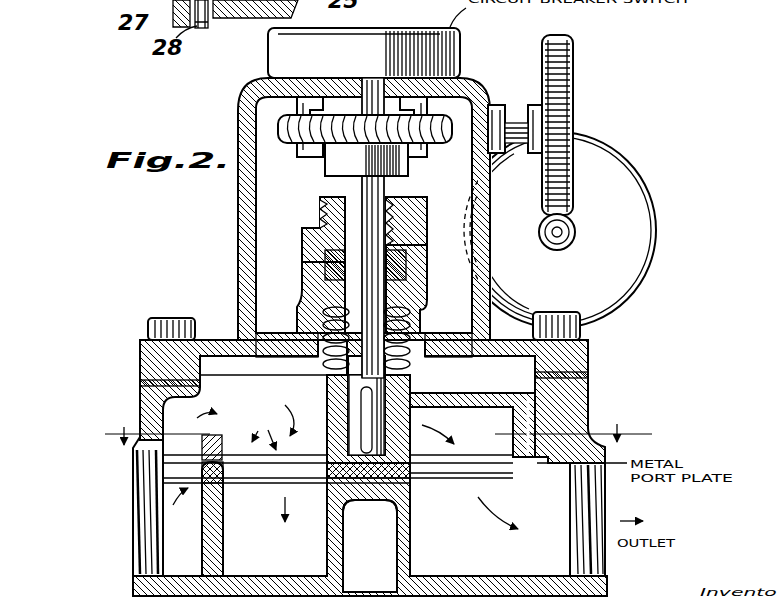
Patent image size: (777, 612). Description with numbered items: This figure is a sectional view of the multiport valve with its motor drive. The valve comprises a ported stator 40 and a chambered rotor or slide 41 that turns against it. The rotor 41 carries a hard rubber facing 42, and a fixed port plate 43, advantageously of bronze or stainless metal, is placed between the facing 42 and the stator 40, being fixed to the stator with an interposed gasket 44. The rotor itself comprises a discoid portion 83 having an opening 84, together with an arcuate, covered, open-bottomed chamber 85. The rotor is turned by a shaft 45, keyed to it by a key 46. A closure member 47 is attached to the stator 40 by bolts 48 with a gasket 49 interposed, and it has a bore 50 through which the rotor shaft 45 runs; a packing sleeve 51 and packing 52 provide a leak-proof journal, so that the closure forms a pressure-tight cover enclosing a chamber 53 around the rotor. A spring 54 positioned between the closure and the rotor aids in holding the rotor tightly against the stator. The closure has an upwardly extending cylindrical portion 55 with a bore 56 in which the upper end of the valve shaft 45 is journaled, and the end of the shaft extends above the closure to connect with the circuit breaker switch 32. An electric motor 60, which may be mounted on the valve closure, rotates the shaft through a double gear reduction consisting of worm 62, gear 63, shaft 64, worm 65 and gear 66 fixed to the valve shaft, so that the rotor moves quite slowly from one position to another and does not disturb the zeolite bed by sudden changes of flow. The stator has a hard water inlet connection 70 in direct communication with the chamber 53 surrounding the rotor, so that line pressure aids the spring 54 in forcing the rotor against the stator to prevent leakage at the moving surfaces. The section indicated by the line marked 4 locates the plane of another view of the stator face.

The circuit breaker switch 32 is at (460, 46).
The upwardly extending cylindrical portion 55 is at (483, 217).
The bore 56 is at (350, 105).
The gear 66 is at (280, 128).
The worm 65 is at (347, 190).
The shaft 64 is at (515, 117).
The gear 63 is at (562, 88).
The electric motor 60 is at (643, 190).
The worm 62 is at (544, 249).
The shaft 45 is at (330, 196).
The packing sleeve 51 is at (393, 198).
The packing 52 is at (403, 258).
The bore 50 is at (343, 296).
The spring 54 is at (407, 327).
The bolts 48 is at (176, 318).
The closure member 47 is at (160, 362).
The gasket 49 is at (150, 383).
The chamber 53 is at (160, 415).
The section line 4 is at (374, 436).
The rotor 41 is at (330, 385).
The opening 84 is at (274, 421).
The arcuate covered open-bottomed chamber 85 is at (520, 422).
The discoid portion 83 is at (203, 450).
The hard rubber facing 42 is at (203, 468).
The fixed port plate 43 is at (222, 485).
The gasket 44 is at (224, 522).
The key 46 is at (328, 481).
The stator 40 is at (371, 508).
The hard water inlet connection 70 is at (128, 527).